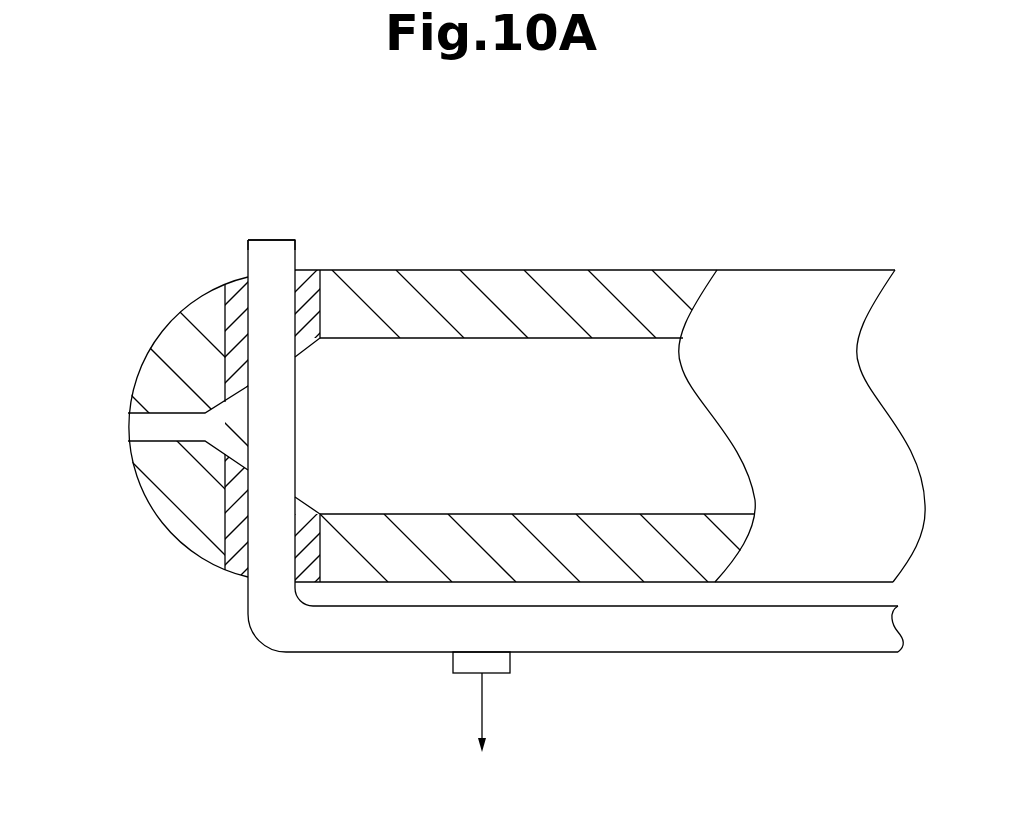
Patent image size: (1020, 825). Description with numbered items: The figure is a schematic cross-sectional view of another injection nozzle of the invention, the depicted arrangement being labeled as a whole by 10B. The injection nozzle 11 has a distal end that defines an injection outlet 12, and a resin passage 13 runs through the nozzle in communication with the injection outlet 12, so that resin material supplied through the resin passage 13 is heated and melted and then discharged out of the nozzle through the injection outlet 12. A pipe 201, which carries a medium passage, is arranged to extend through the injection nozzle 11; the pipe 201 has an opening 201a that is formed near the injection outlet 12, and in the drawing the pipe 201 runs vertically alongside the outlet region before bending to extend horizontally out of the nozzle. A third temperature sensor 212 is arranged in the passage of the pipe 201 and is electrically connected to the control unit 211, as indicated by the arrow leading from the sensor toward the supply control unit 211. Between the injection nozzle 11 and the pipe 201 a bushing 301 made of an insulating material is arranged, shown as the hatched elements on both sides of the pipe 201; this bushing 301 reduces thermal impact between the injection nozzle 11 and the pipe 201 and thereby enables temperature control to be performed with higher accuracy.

The nozzle unit 10B is at (272, 200).
The injection nozzle 11 is at (790, 285).
The injection outlet 12 is at (128, 422).
The resin passage 13 is at (556, 340).
The pipe 201 is at (275, 410).
The opening 201a is at (280, 239).
The third temperature sensor 212 is at (498, 663).
The control unit 211 is at (484, 730).
The bushing 301 is at (235, 285).